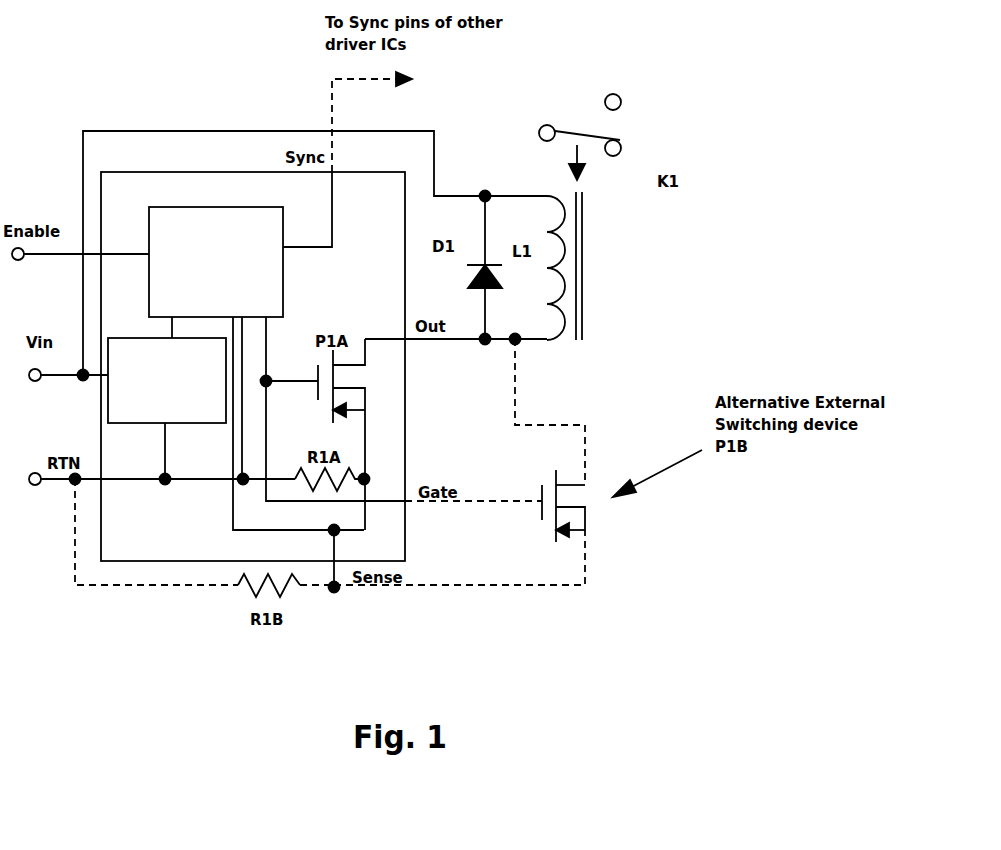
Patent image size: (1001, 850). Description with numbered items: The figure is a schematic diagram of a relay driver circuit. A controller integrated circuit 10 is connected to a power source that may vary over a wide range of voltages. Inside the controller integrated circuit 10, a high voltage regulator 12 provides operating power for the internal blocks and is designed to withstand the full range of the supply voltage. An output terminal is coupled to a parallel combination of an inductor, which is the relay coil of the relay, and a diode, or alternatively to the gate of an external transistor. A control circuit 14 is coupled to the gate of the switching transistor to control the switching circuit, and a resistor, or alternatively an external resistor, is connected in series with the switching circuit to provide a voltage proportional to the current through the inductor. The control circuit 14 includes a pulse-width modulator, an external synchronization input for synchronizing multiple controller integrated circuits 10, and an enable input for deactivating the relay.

The controller integrated circuit 10 is at (254, 199).
The high voltage regulator 12 is at (141, 410).
The control circuit 14 is at (184, 279).